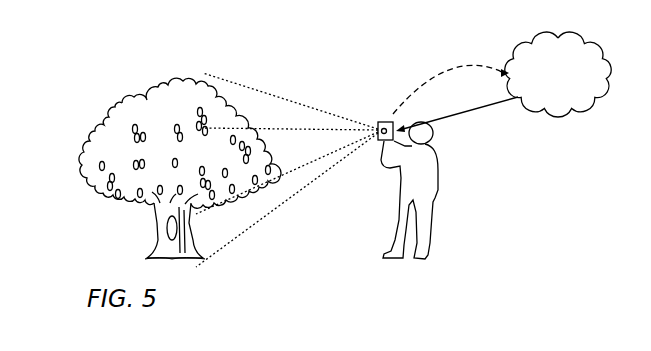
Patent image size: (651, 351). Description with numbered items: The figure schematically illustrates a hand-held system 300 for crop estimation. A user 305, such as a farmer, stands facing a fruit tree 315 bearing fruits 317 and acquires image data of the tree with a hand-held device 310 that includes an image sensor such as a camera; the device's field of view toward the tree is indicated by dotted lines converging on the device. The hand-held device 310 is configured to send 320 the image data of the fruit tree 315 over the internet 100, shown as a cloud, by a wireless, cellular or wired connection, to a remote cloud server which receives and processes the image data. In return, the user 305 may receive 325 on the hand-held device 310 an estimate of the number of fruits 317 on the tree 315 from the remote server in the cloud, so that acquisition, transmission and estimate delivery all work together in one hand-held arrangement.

The hand-held system 300 is at (141, 46).
The user 305 is at (462, 180).
The hand-held device 310 is at (378, 121).
The fruit tree 315 is at (122, 103).
The fruits 317 is at (144, 125).
The send 320 is at (419, 85).
The receive 325 is at (473, 110).
The internet 100 is at (572, 82).